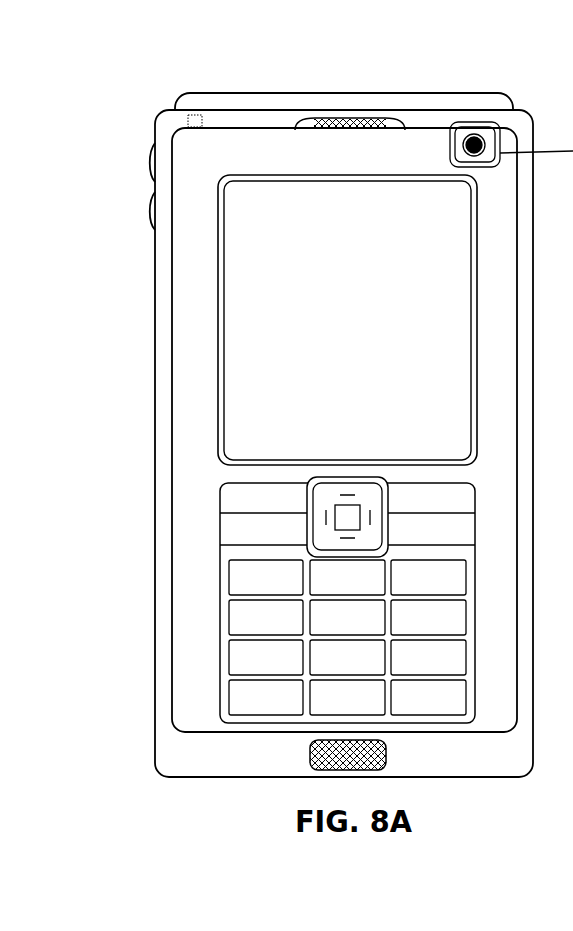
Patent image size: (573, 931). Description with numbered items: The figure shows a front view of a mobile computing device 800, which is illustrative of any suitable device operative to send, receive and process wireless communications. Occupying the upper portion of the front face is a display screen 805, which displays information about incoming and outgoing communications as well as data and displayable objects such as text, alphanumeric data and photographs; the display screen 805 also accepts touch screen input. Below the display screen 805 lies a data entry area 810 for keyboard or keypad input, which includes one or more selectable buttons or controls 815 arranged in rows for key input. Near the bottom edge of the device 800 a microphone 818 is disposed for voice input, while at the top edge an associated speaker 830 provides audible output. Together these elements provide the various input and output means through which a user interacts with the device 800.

The mobile computing device 800 is at (157, 116).
The display screen 805 is at (250, 306).
The data entry area 810 is at (220, 524).
The selectable buttons or controls 815 is at (241, 617).
The microphone 818 is at (311, 757).
The speaker 830 is at (386, 120).